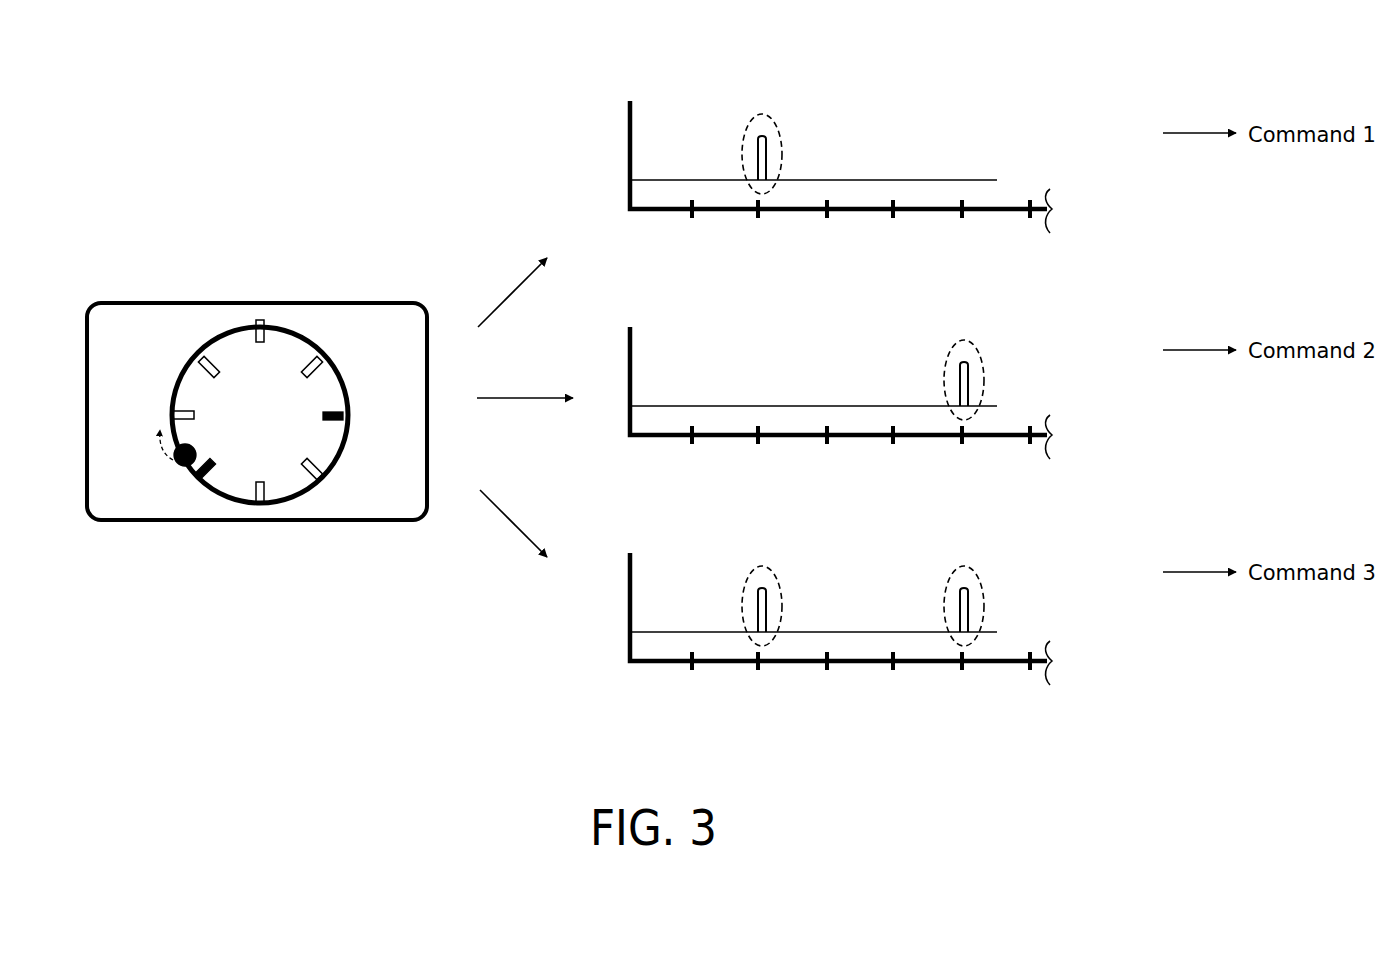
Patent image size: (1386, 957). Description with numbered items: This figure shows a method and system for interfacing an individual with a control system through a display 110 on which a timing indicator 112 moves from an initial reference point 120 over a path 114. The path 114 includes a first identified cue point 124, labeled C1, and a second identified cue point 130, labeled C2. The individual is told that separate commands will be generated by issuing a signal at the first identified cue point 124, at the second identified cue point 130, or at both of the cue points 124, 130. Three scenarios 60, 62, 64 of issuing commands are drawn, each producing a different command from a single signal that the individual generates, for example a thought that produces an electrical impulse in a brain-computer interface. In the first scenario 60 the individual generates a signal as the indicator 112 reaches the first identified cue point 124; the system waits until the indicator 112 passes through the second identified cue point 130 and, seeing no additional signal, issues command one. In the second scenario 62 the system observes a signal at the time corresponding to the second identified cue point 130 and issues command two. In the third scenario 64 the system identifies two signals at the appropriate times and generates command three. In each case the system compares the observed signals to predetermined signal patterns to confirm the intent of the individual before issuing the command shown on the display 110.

The first scenario 60 is at (511, 292).
The second scenario 62 is at (525, 388).
The third scenario 64 is at (513, 521).
The display 110 is at (160, 524).
The timing indicator 112 is at (178, 466).
The path 114 is at (181, 373).
The initial reference point 120 is at (260, 320).
The first identified cue point 124 is at (336, 408).
The second identified cue point 130 is at (200, 474).
The first position label C1 is at (365, 416).
The second position label C2 is at (182, 490).